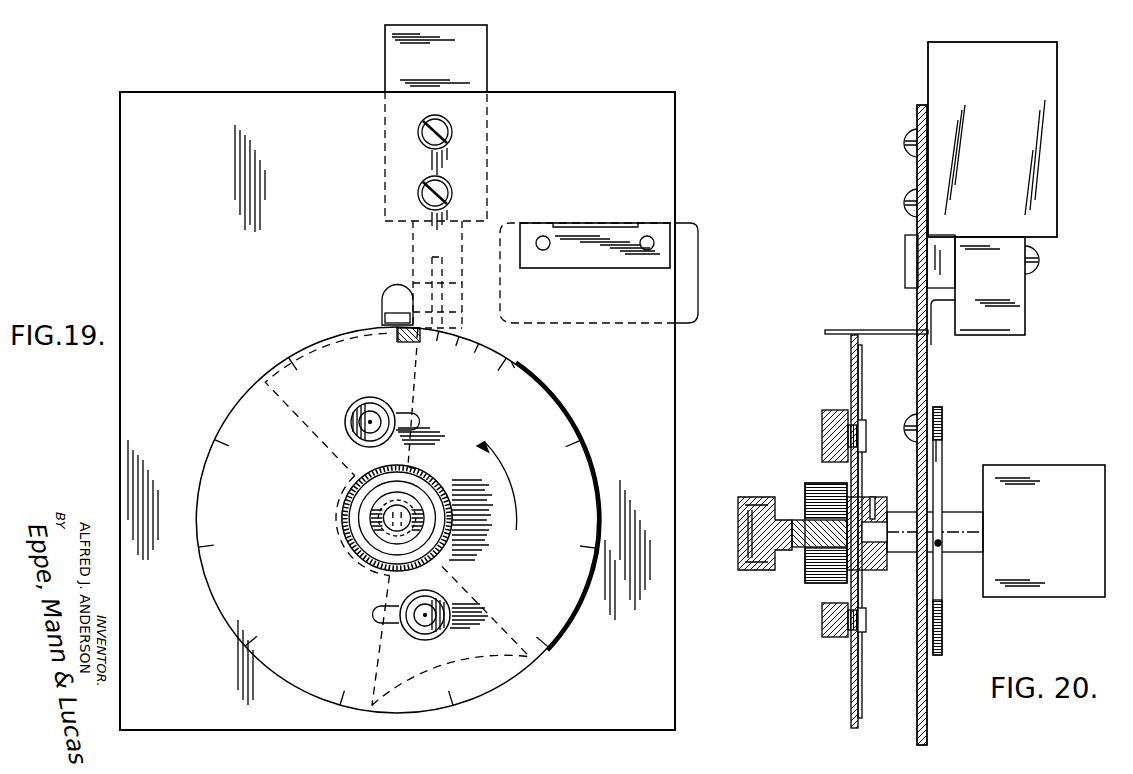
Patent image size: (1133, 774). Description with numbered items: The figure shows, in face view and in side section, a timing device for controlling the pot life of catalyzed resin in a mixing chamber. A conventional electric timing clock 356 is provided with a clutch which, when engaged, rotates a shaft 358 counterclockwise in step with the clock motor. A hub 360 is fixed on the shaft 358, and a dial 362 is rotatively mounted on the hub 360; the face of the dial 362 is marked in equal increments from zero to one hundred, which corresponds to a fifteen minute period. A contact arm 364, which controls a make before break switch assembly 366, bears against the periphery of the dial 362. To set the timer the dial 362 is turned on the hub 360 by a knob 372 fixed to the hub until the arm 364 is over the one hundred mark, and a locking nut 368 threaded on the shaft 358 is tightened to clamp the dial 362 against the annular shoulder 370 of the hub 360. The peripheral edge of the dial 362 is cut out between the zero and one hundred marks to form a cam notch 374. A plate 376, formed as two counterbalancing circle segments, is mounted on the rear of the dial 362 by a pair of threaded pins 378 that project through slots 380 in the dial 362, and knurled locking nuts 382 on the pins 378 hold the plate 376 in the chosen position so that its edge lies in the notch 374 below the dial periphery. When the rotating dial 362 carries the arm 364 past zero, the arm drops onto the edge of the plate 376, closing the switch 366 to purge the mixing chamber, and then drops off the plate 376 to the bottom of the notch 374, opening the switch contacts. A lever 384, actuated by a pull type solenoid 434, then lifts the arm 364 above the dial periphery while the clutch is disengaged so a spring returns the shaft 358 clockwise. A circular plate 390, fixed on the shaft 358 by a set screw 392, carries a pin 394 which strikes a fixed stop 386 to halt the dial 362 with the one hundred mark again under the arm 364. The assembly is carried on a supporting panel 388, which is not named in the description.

In FIG. 20, the electric timing clock 356 is at (1073, 466).
In FIG. 20, the shaft 358 is at (905, 553).
In FIG. 20, the hub 360 is at (800, 548).
In FIG. 19, the dial 362 is at (398, 520).
In FIG. 20, the dial 362 is at (851, 531).
In FIG. 19, the contact arm 364 is at (382, 318).
In FIG. 20, the contact arm 364 is at (832, 330).
In FIG. 19, the switch assembly 366 is at (700, 290).
In FIG. 20, the switch assembly 366 is at (1010, 315).
In FIG. 19, the locking nut 368 is at (407, 518).
In FIG. 20, the locking nut 368 is at (805, 483).
In FIG. 20, the annular shoulder 370 is at (855, 500).
In FIG. 19, the knob 372 is at (364, 518).
In FIG. 20, the knob 372 is at (738, 535).
In FIG. 19, the notch 374 is at (548, 499).
In FIG. 20, the plate 376 is at (880, 531).
In FIG. 20, the threaded pins 378 is at (866, 426).
In FIG. 19, the slots 380 is at (420, 421).
In FIG. 19, the knurled locking nuts 382 is at (385, 400).
In FIG. 20, the knurled locking nuts 382 is at (841, 514).
In FIG. 20, the solenoid actuated lever 384 is at (931, 345).
In FIG. 20, the fixed stop 386 is at (931, 410).
In FIG. 19, the panel 388 is at (657, 703).
In FIG. 20, the panel 388 is at (926, 722).
In FIG. 20, the circular plate 390 is at (962, 518).
In FIG. 20, the set screw 392 is at (940, 542).
In FIG. 20, the pin 394 is at (936, 460).
In FIG. 19, the pull type solenoid 434 is at (487, 65).
In FIG. 20, the pull type solenoid 434 is at (1050, 80).